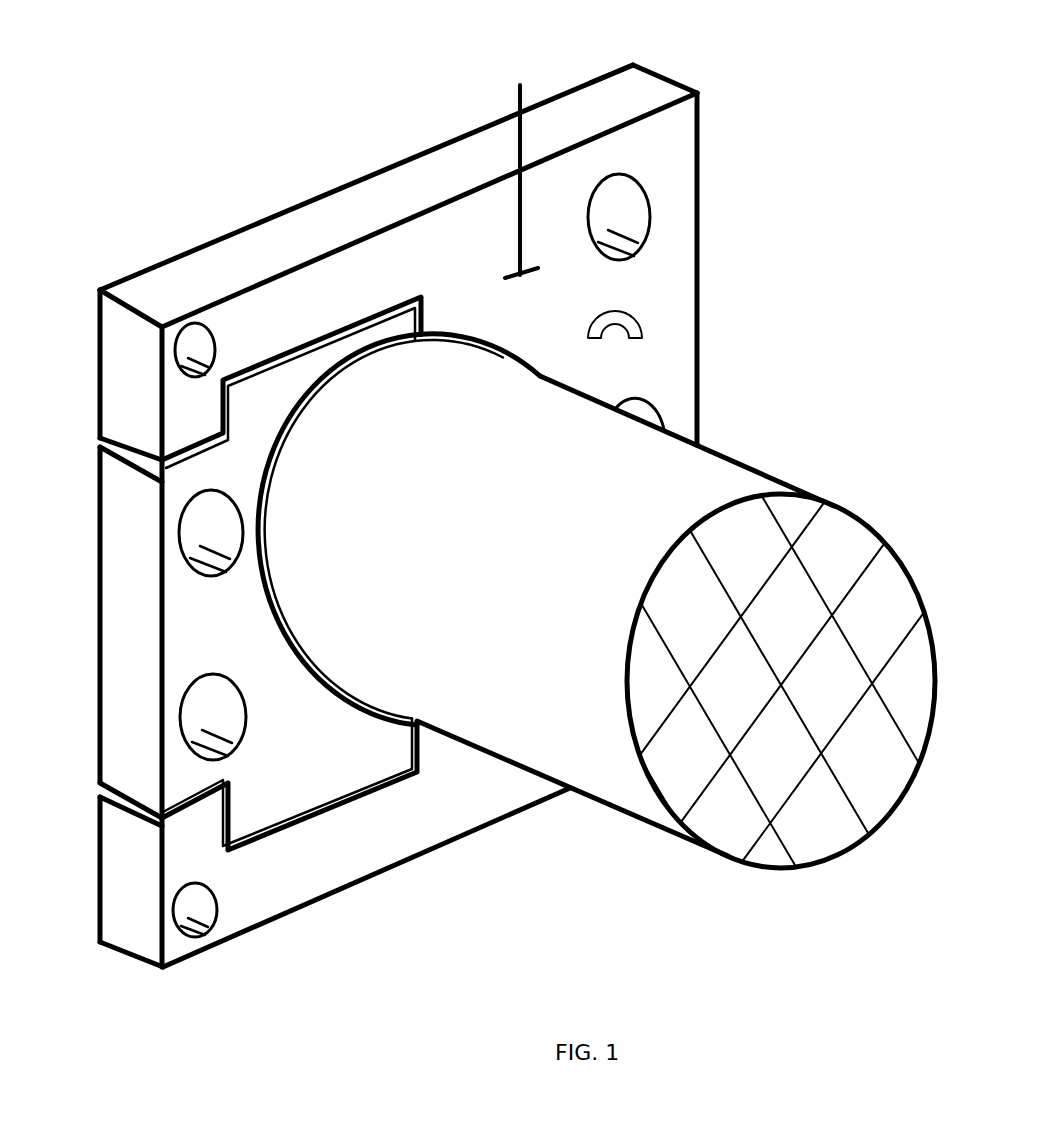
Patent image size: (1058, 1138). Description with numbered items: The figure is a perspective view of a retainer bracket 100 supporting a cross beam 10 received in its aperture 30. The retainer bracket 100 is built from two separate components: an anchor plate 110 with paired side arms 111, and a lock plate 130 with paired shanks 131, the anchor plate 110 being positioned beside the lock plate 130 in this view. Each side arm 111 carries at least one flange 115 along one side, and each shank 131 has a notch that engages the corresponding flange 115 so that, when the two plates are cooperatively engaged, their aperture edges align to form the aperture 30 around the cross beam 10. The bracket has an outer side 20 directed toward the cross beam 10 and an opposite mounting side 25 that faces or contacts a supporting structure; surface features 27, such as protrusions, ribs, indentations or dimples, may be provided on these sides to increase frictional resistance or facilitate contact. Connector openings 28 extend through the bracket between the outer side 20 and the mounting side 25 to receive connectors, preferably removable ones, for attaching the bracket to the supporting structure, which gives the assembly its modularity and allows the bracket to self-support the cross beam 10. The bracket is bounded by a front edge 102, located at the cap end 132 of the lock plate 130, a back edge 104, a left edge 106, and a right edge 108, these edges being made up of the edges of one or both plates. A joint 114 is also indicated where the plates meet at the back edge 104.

The cross beam 10 is at (822, 548).
The outer side 20 is at (521, 168).
The mounting side 25 is at (597, 80).
The surface features 27 is at (640, 320).
The connector openings 28 is at (640, 205).
The aperture 30 is at (287, 400).
The retainer bracket 100 is at (222, 180).
The front edge 102 is at (703, 348).
The back edge 104 is at (122, 620).
The left edge 106 is at (328, 902).
The right edge 108 is at (645, 97).
The anchor plate 110 is at (475, 225).
The side arms 111 is at (257, 443).
The notch joint 114 is at (197, 785).
The flange 115 is at (305, 362).
The lock plate 130 is at (655, 270).
The shanks 131 is at (370, 267).
The cap end 132 is at (675, 418).